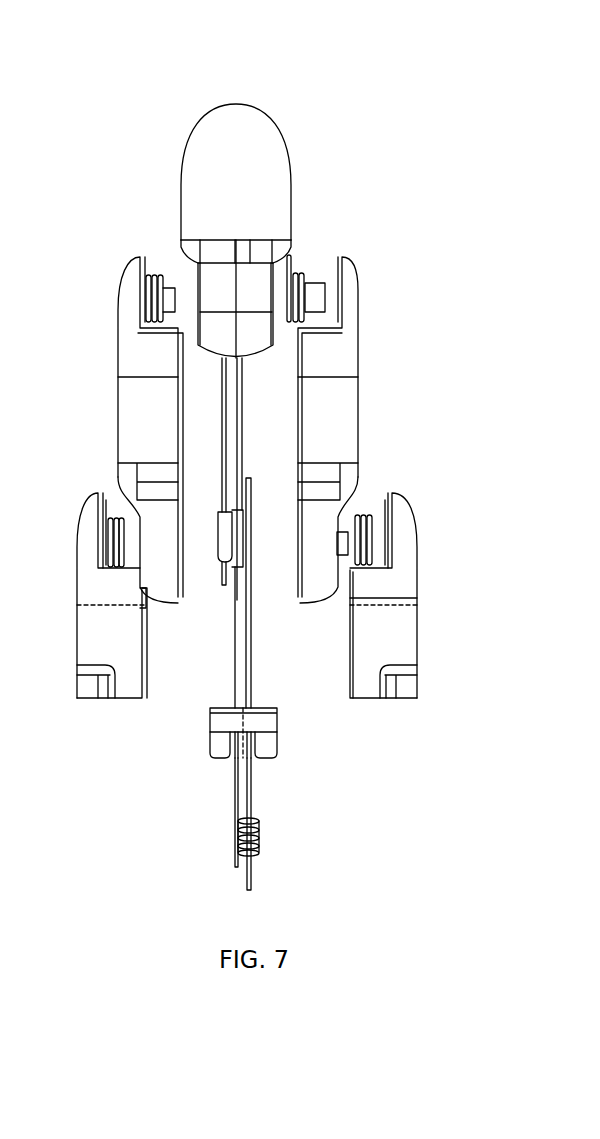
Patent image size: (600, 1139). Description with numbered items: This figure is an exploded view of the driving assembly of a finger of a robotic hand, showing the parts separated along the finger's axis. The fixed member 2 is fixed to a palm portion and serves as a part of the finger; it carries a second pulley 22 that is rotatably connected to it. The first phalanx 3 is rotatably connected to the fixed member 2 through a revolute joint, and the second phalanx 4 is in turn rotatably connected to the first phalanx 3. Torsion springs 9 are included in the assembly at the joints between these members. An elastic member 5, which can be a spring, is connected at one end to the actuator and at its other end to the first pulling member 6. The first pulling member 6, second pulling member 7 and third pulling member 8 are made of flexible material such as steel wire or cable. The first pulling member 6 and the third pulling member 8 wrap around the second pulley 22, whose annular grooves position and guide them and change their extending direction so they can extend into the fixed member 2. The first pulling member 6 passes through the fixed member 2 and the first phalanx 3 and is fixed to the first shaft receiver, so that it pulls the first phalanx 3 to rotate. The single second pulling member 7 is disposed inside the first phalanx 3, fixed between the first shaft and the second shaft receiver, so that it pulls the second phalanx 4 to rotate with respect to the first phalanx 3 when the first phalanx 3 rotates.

The fixed member 2 is at (390, 627).
The first phalanx 3 is at (340, 403).
The second phalanx 4 is at (236, 149).
The elastic member 5 is at (260, 838).
The first pulling member 6 is at (252, 790).
The second pulling member 7 is at (225, 432).
The third pulling member 8 is at (240, 473).
The torsion spring 9 is at (157, 270).
The second pulley 22 is at (262, 745).